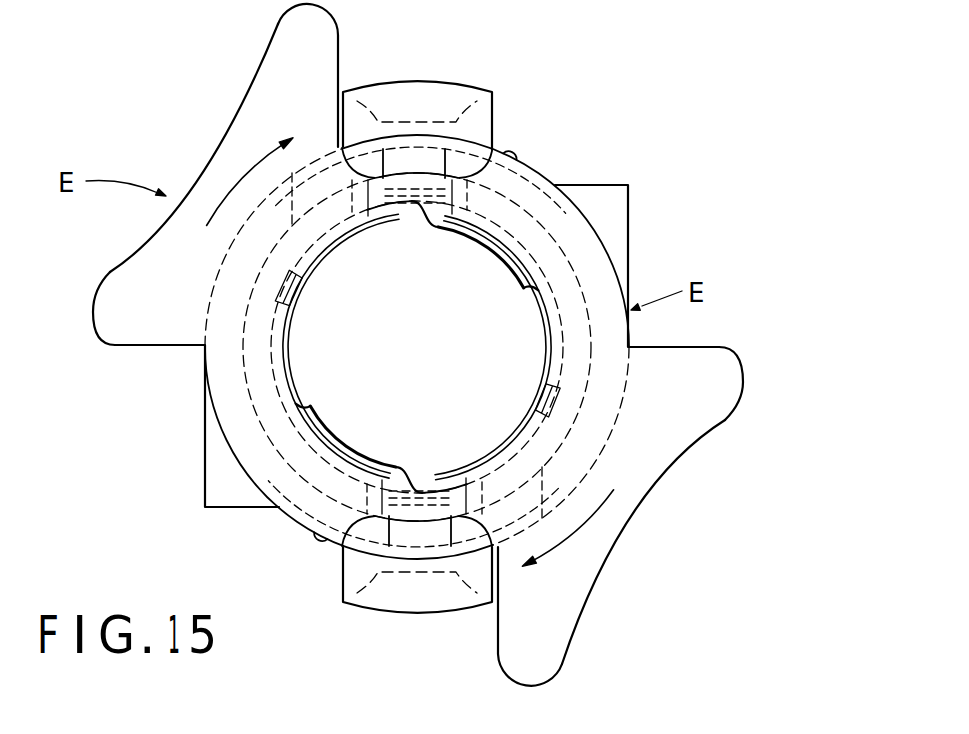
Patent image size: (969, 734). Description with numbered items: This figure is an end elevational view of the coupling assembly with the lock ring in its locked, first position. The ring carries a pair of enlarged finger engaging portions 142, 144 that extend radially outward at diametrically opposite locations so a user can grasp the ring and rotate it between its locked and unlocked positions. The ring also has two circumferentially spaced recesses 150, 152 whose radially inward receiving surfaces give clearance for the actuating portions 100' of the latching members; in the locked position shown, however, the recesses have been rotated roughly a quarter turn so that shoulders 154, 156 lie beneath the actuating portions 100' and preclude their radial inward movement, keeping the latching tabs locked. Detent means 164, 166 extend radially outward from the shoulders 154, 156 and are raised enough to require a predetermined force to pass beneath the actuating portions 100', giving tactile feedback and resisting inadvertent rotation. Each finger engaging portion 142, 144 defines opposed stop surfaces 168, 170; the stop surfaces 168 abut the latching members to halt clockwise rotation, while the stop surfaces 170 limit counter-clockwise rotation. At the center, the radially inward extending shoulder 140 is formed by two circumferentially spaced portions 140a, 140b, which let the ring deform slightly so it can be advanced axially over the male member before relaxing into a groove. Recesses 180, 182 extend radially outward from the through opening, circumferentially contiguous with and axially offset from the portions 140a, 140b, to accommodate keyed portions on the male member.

The actuating portion 100' is at (431, 355).
The radially inward extending shoulder 140 is at (510, 303).
The first portion of shoulder 140a is at (497, 251).
The second portion of shoulder 140b is at (313, 423).
The finger engaging portion 142 is at (582, 567).
The finger engaging portion 144 is at (258, 124).
The recess 150 is at (567, 262).
The recess 152 is at (265, 422).
The shoulder 154 is at (486, 130).
The shoulder 156 is at (355, 553).
The detent means 164 is at (514, 154).
The detent means 166 is at (316, 540).
The stop surface 168 is at (341, 42).
The stop surface 170 is at (138, 358).
The recess 180 is at (305, 278).
The recess 182 is at (550, 393).